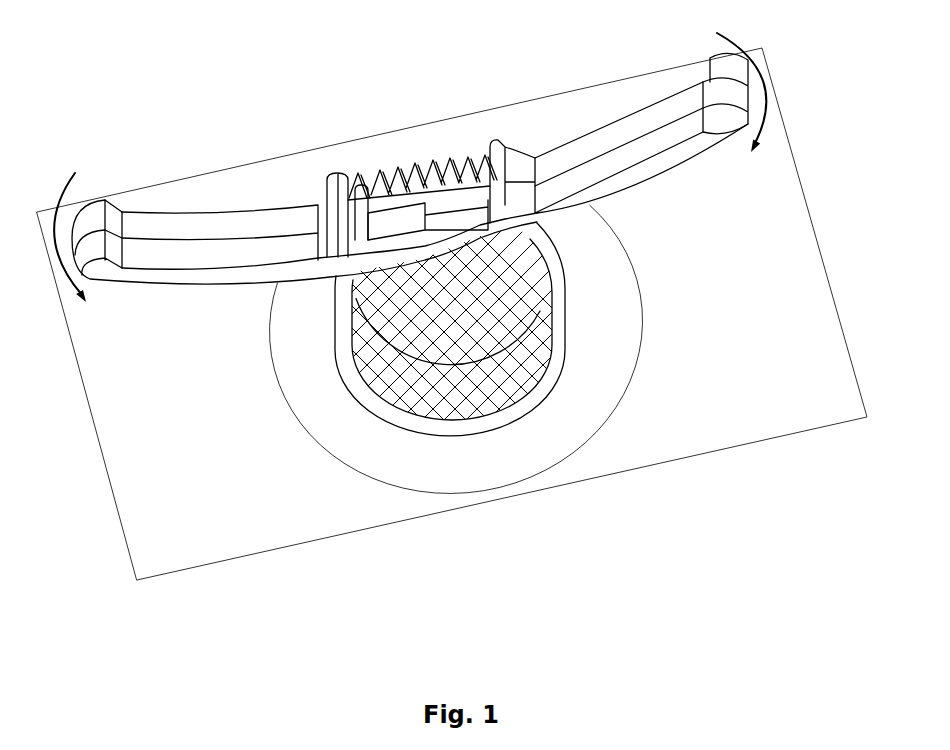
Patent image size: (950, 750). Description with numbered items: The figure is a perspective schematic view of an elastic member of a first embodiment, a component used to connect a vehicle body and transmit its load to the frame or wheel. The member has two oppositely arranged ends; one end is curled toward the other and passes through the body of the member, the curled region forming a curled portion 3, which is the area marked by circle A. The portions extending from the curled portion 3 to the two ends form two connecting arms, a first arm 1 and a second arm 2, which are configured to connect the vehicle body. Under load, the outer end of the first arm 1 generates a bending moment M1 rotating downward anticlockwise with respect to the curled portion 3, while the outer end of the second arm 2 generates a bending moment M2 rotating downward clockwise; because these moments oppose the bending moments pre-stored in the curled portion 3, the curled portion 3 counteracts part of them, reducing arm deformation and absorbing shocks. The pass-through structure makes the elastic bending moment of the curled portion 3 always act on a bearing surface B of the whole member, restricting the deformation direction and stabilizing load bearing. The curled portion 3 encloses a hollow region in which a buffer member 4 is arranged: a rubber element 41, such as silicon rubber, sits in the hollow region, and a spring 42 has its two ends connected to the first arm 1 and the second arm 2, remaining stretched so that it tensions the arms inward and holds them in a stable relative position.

The first arm 1 is at (200, 220).
The second arm 2 is at (657, 112).
The curled portion 3 is at (560, 347).
The buffer member 4 is at (444, 382).
The rubber element 41 is at (433, 400).
The spring 42 is at (447, 195).
The circle A is at (637, 360).
The bearing surface B is at (310, 150).
The bending moment M1 is at (53, 237).
The bending moment M2 is at (763, 92).